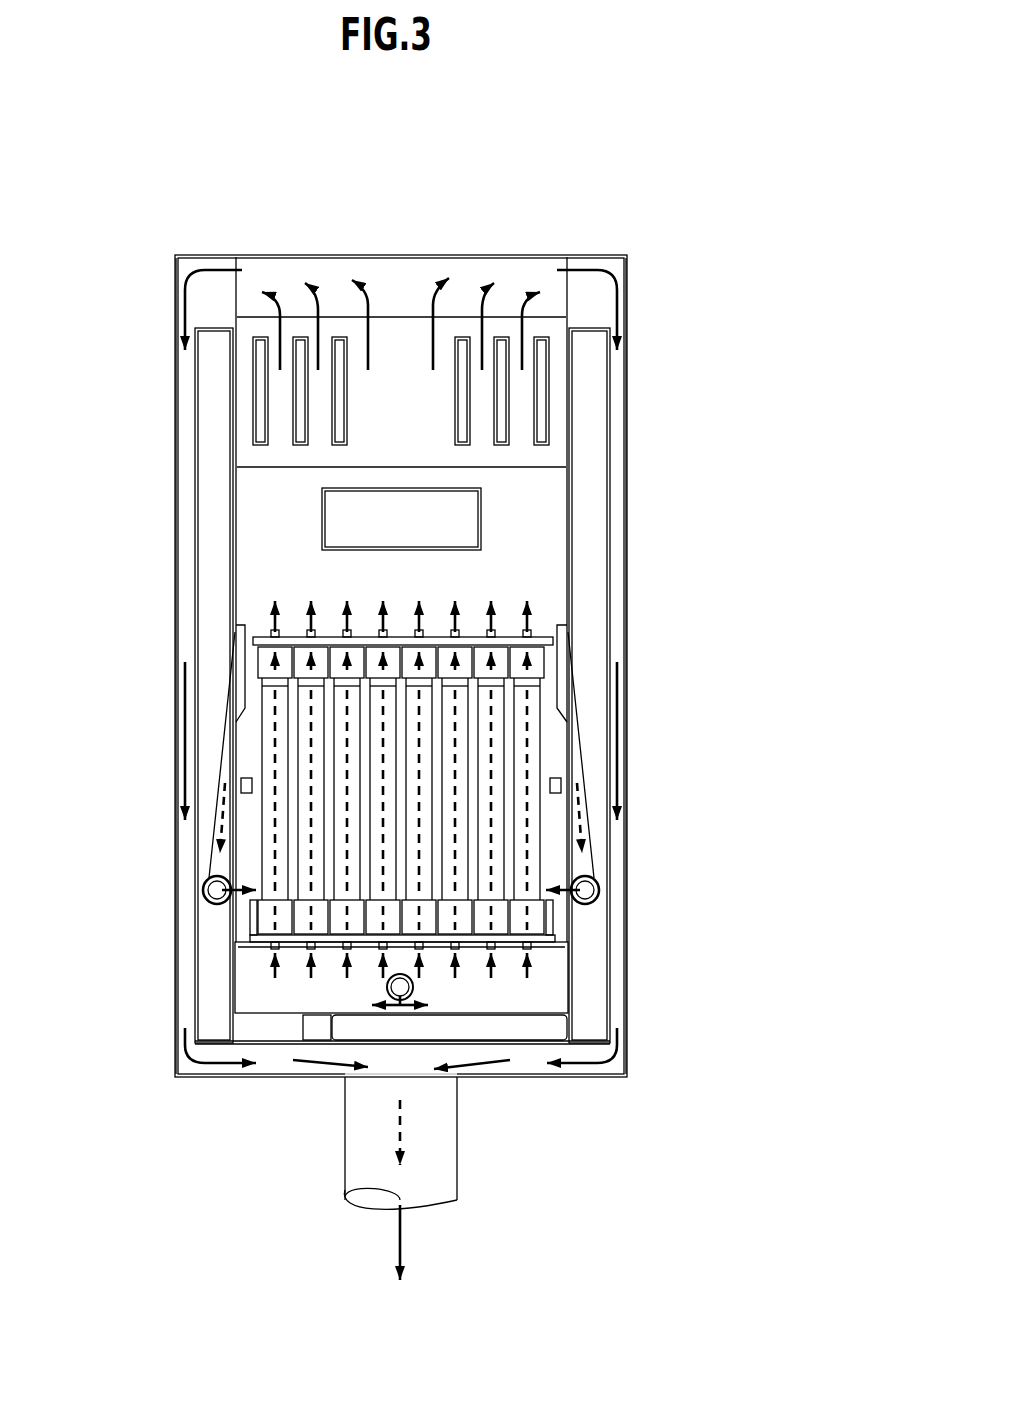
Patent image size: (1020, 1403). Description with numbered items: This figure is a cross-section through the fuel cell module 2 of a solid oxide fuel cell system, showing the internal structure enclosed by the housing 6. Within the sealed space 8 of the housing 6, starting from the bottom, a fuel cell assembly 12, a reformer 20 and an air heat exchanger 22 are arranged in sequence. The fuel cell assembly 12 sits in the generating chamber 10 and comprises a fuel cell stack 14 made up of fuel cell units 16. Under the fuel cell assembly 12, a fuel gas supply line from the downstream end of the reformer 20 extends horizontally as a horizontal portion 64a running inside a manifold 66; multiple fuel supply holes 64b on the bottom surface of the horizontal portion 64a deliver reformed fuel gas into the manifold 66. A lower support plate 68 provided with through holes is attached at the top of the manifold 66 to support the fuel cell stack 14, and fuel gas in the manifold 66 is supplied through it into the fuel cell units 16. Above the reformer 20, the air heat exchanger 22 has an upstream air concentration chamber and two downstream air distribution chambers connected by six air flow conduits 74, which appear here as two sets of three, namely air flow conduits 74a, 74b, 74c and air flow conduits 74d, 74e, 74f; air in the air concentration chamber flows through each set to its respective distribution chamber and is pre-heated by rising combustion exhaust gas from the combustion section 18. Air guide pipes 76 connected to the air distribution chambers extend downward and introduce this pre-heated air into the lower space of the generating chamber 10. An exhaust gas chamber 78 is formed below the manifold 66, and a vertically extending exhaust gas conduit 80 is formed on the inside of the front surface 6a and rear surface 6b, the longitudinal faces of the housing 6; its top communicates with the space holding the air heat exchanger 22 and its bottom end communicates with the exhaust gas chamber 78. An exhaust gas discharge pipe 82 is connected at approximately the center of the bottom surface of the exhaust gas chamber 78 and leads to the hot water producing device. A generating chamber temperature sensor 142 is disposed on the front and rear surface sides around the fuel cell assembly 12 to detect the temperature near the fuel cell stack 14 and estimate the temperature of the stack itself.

The fuel cell module 2 is at (707, 316).
The housing 6 is at (627, 768).
The front surface 6a is at (175, 505).
The rear surface 6b is at (627, 480).
The sealed space 8 is at (267, 528).
The generating chamber 10 is at (295, 735).
The fuel cell assembly 12 is at (526, 789).
The fuel cell stack 14 is at (526, 789).
The fuel cell units 16 is at (545, 866).
The combustion section 18 is at (386, 588).
The reformer 20 is at (481, 522).
The air heat exchanger 22 is at (493, 283).
The air flow conduits 74 is at (548, 430).
The air flow conduit 74a is at (260, 335).
The air flow conduit 74b is at (293, 335).
The air flow conduit 74c is at (337, 335).
The air flow conduit 74d is at (463, 335).
The air flow conduit 74e is at (503, 335).
The air flow conduit 74f is at (543, 335).
The horizontal portion 64a is at (413, 984).
The fuel supply holes 64b is at (388, 985).
The manifold 66 is at (568, 968).
The lower support plate 68 is at (572, 938).
The air guide pipes 76 is at (205, 855).
The exhaust gas chamber 78 is at (607, 1078).
The exhaust gas conduit 80 is at (183, 625).
The exhaust gas discharge pipe 82 is at (457, 1150).
The generating chamber temperature sensor 142 is at (241, 785).